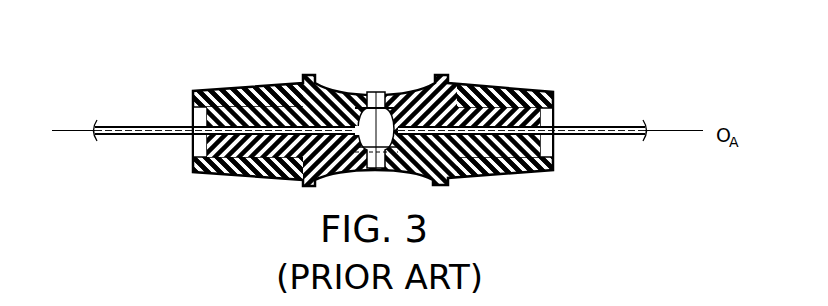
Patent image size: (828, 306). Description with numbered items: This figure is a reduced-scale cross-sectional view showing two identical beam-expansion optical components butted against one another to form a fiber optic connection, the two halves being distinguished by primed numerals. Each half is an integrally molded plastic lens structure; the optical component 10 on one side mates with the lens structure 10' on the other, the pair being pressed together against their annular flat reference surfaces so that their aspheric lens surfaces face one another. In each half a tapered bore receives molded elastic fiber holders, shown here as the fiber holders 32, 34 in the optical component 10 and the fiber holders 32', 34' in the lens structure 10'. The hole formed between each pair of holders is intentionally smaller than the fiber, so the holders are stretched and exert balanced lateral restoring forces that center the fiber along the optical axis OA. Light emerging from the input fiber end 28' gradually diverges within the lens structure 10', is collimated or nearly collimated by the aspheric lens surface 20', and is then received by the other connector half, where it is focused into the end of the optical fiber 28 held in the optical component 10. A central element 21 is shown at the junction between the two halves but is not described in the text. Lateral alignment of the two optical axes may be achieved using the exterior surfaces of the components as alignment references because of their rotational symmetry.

The optical component 10 is at (465, 105).
The lens structure 10' is at (282, 106).
The aspheric lens surface 20' is at (365, 105).
The central alignment element 21 is at (384, 97).
The optical fiber 28 is at (550, 119).
The fiber end 28' is at (209, 117).
The fiber holder 32 is at (506, 118).
The fiber holder 32' is at (243, 119).
The fiber holder 34 is at (504, 157).
The fiber holder 34' is at (252, 156).